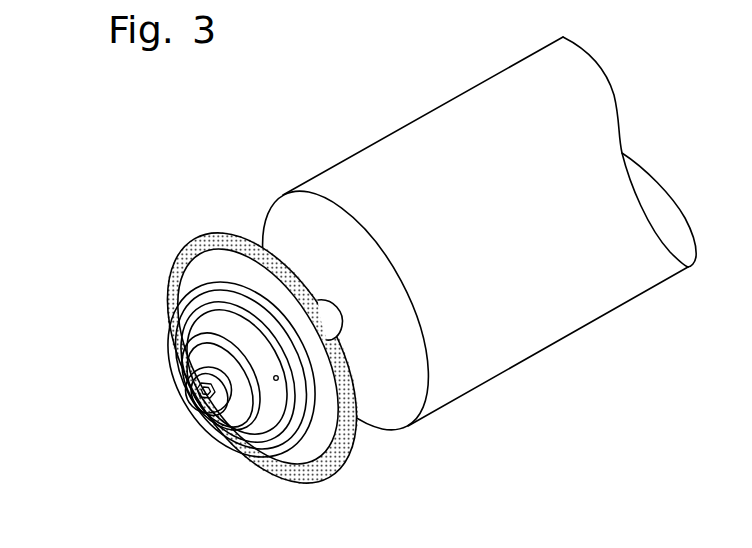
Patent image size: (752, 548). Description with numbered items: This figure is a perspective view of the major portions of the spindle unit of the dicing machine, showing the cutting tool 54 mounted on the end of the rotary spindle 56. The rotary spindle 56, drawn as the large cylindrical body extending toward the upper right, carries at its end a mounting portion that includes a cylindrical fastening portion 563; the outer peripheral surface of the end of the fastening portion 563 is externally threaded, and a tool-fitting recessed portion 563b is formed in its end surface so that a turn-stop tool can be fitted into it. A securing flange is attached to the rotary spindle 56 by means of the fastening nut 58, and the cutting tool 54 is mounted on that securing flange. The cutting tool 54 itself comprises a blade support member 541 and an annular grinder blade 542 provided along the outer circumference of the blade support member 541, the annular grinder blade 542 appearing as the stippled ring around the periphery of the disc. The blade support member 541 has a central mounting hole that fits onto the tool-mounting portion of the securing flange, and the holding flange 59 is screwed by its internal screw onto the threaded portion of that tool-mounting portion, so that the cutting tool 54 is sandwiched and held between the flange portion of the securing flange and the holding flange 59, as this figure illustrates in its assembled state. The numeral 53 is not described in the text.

The cylindrical roller body 53 is at (450, 97).
The cutting tool 54 is at (190, 236).
The blade support member 541 is at (190, 297).
The annular grinder blade 542 is at (233, 234).
The rotary spindle 56 is at (341, 327).
The fastening nut 58 is at (170, 364).
The holding flange 59 is at (164, 339).
The cylindrical fastening portion 563 is at (190, 388).
The tool-fitting recessed portion 563b is at (205, 393).